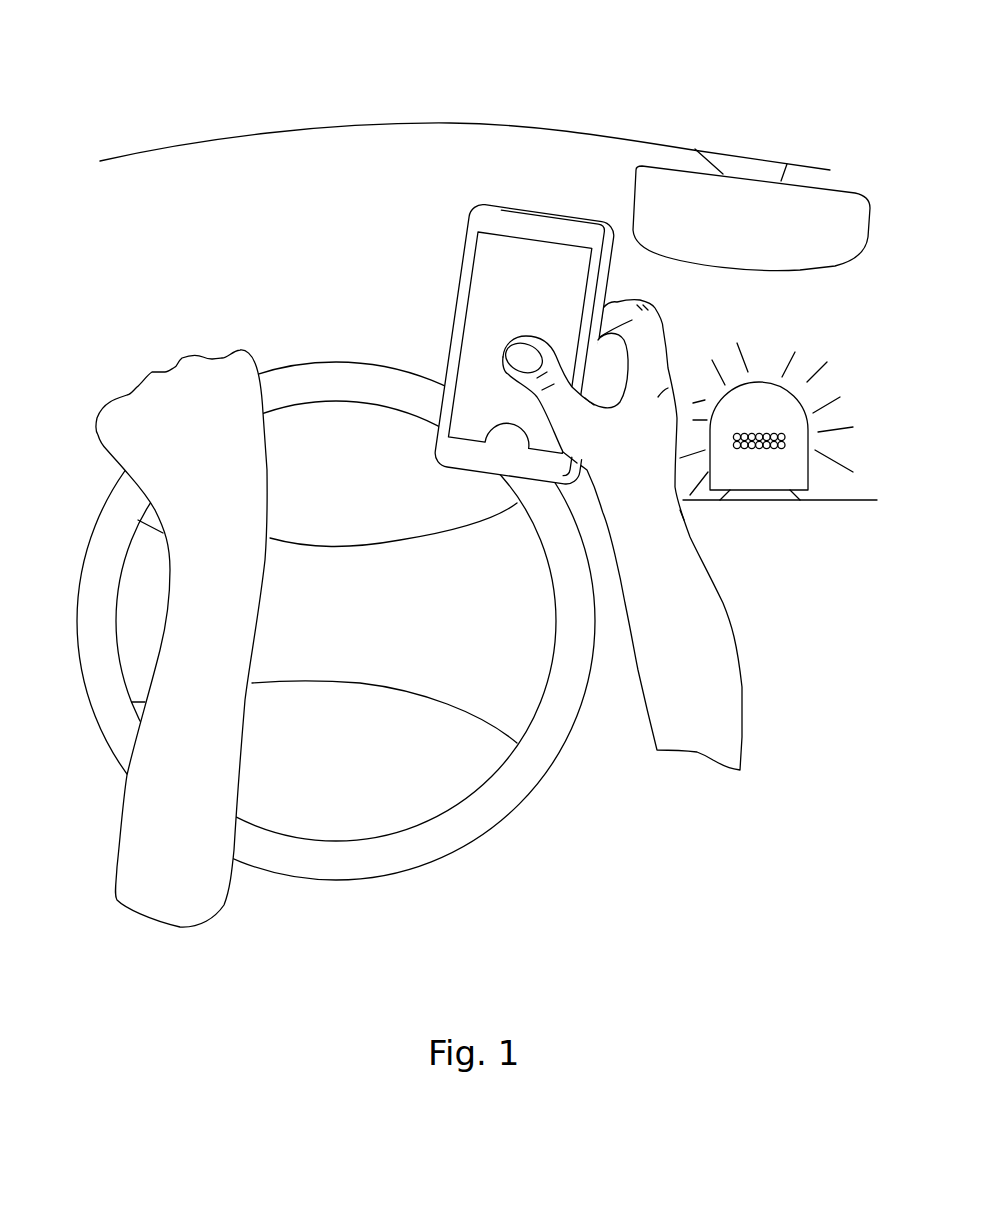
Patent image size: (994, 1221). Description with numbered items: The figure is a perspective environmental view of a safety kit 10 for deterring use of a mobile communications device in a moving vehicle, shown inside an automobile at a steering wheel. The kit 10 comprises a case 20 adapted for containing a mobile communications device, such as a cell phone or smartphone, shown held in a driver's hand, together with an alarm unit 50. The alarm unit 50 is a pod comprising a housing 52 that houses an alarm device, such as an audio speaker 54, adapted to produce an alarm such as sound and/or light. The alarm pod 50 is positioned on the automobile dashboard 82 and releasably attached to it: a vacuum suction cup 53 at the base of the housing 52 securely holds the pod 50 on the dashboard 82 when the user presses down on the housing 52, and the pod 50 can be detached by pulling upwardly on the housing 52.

The kit 10 is at (462, 106).
The case 20 is at (456, 309).
The alarm unit 50 is at (779, 454).
The housing 52 is at (795, 470).
The vacuum suction cup 53 is at (747, 492).
The audio speaker 54 is at (740, 430).
The automobile dashboard 82 is at (852, 498).